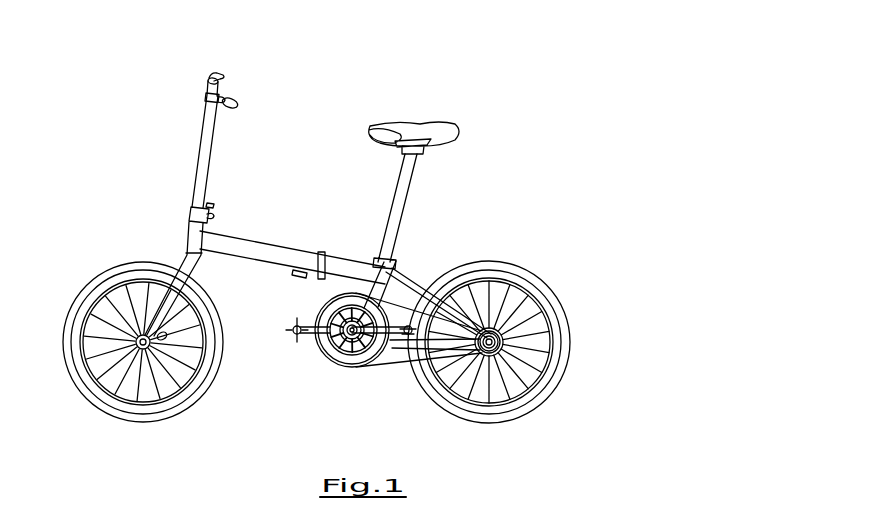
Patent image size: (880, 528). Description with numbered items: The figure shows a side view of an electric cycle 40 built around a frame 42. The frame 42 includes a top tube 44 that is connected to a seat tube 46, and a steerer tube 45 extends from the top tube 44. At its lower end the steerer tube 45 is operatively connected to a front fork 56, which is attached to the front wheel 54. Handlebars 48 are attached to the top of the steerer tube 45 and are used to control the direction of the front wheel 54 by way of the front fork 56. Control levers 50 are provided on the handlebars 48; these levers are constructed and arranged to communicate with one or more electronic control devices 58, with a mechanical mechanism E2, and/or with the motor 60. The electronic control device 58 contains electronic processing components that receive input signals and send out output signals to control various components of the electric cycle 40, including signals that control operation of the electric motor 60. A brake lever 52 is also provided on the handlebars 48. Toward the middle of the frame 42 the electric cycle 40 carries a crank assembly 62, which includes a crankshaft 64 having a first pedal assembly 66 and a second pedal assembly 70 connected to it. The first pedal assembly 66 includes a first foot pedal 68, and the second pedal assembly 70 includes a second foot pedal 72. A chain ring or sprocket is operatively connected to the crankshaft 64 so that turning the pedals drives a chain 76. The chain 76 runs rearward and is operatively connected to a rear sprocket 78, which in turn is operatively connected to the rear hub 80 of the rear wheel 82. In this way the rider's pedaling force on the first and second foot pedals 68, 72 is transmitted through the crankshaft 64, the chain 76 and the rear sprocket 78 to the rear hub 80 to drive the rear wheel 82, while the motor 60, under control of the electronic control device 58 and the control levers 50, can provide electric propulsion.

The electric cycle 40 is at (478, 83).
The frame 42 is at (228, 245).
The top tube 44 is at (290, 256).
The steerer tube 45 is at (212, 147).
The seat tube 46 is at (407, 270).
The handlebars 48 is at (205, 82).
The control levers 50 is at (240, 99).
The brake lever 52 is at (206, 101).
The front wheel 54 is at (97, 280).
The front fork 56 is at (184, 262).
The electronic control device 58 is at (336, 300).
The motor 60 is at (385, 362).
The crank assembly 62 is at (343, 370).
The crankshaft 64 is at (380, 372).
The first pedal assembly 66 is at (318, 340).
The first foot pedal 68 is at (293, 338).
The second pedal assembly 70 is at (410, 348).
The second foot pedal 72 is at (420, 275).
The chain 76 is at (400, 283).
The rear sprocket 78 is at (491, 352).
The rear hub 80 is at (494, 338).
The rear wheel 82 is at (523, 272).
The mechanical mechanism E2 is at (338, 323).